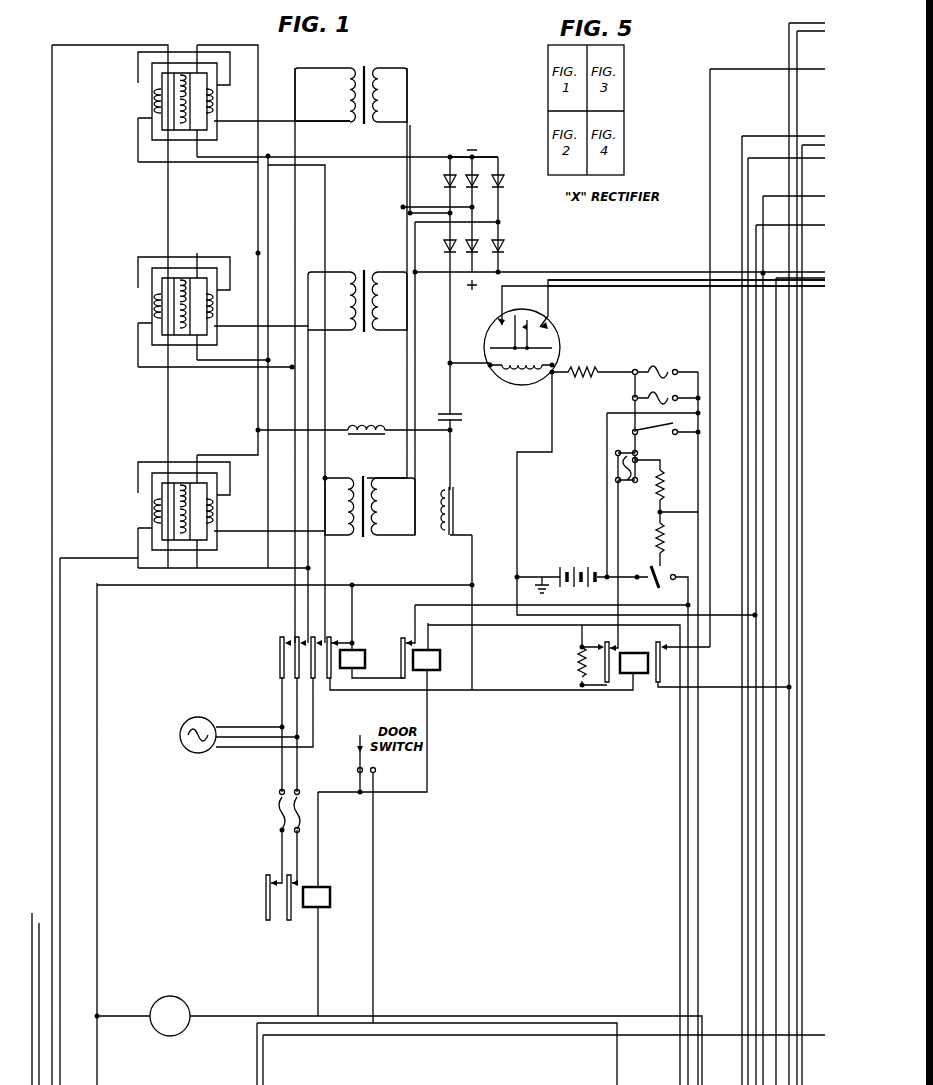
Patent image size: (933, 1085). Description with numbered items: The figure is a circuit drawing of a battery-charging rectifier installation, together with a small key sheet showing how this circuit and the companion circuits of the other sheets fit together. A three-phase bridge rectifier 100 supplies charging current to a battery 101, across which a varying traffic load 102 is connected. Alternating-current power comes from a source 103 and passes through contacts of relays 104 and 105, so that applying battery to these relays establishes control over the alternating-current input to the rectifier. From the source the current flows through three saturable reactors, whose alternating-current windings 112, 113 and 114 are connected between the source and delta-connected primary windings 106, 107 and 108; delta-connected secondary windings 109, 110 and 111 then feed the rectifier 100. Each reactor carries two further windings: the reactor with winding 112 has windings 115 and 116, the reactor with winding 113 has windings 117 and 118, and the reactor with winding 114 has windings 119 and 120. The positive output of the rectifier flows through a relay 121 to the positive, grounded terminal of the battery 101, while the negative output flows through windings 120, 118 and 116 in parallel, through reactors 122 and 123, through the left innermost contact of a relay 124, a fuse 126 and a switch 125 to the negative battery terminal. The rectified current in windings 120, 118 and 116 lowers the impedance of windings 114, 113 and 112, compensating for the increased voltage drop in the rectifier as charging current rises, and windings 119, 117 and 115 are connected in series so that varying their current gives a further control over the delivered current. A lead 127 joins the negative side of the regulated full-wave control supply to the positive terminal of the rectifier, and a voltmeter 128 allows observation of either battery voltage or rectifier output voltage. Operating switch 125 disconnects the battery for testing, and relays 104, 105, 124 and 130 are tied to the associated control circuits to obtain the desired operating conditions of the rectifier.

The three-phase bridge rectifier 100 is at (500, 196).
The battery 101 is at (586, 565).
The varying traffic load 102 is at (588, 375).
The source 103 is at (203, 716).
The relay 104 is at (353, 648).
The relay 105 is at (331, 900).
The primary winding 106 is at (345, 97).
The primary winding 107 is at (350, 272).
The primary winding 108 is at (352, 470).
The secondary winding 109 is at (370, 70).
The secondary winding 110 is at (378, 272).
The secondary winding 111 is at (379, 478).
The alternating-current winding 112 is at (173, 511).
The alternating-current winding 113 is at (174, 306).
The alternating-current winding 114 is at (146, 97).
The winding 115 is at (181, 541).
The winding 116 is at (179, 468).
The winding 117 is at (182, 347).
The winding 118 is at (184, 264).
The winding 119 is at (186, 133).
The winding 120 is at (183, 73).
The relay 121 is at (558, 330).
The reactor 122 is at (368, 428).
The reactor 123 is at (456, 513).
The relay 124 is at (640, 675).
The switch 125 is at (663, 432).
The fuse 126 is at (622, 483).
The lead 127 is at (607, 272).
The voltmeter 128 is at (183, 996).
The relay 130 is at (441, 658).